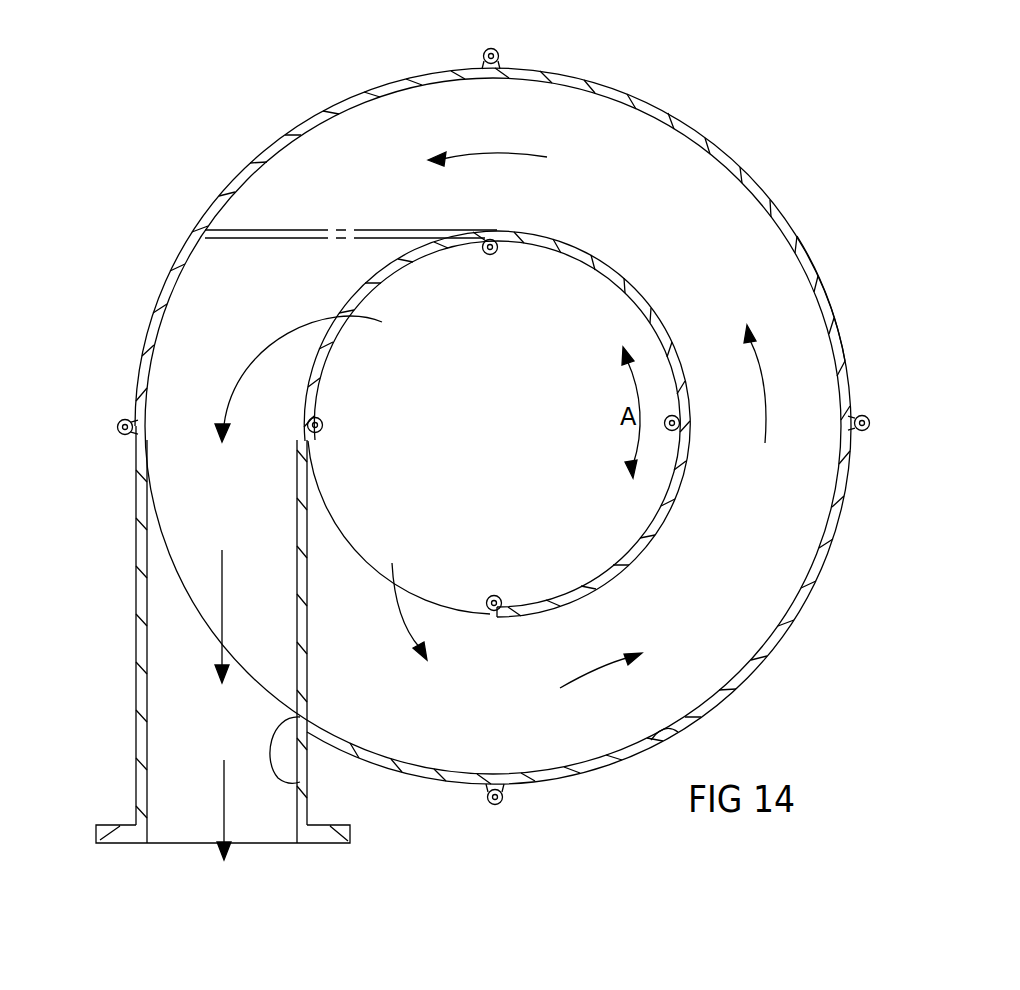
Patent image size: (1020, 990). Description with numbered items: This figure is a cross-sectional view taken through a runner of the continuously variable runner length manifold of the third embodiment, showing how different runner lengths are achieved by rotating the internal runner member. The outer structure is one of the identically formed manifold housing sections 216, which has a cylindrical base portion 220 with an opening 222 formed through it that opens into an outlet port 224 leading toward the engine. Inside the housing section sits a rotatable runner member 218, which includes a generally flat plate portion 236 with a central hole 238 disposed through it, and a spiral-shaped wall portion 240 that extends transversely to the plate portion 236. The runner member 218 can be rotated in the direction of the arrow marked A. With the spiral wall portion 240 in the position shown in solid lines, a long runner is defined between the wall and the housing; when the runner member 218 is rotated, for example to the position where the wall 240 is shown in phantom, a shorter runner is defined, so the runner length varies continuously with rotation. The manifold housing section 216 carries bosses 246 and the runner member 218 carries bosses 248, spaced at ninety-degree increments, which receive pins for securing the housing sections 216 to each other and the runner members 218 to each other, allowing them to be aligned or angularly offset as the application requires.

The manifold housing section 216 is at (752, 162).
The runner member 218 is at (740, 215).
The cylindrical base portion 220 is at (645, 97).
The opening 222 is at (300, 782).
The outlet port 224 is at (140, 790).
The plate portion 236 is at (790, 300).
The central hole 238 is at (583, 585).
The spiral-shaped wall portion 240 is at (283, 224).
The boss 246 is at (486, 50).
The boss 248 is at (498, 256).